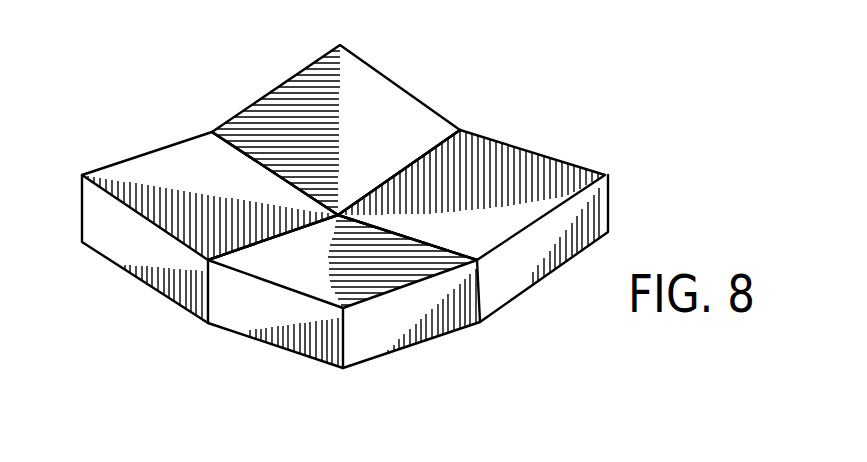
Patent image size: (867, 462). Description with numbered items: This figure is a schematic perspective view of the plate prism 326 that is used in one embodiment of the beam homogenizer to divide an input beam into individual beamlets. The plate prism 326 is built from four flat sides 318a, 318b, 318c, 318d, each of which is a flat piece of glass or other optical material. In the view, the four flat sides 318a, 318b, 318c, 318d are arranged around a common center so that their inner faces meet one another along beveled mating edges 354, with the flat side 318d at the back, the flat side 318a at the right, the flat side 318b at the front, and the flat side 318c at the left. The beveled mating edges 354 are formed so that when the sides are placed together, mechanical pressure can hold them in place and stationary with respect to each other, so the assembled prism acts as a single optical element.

The plate prism 326 is at (588, 77).
The flat side 318a is at (607, 198).
The flat side 318b is at (363, 362).
The flat side 318c is at (167, 147).
The flat side 318d is at (376, 70).
The beveled mating edges 354 is at (268, 169).